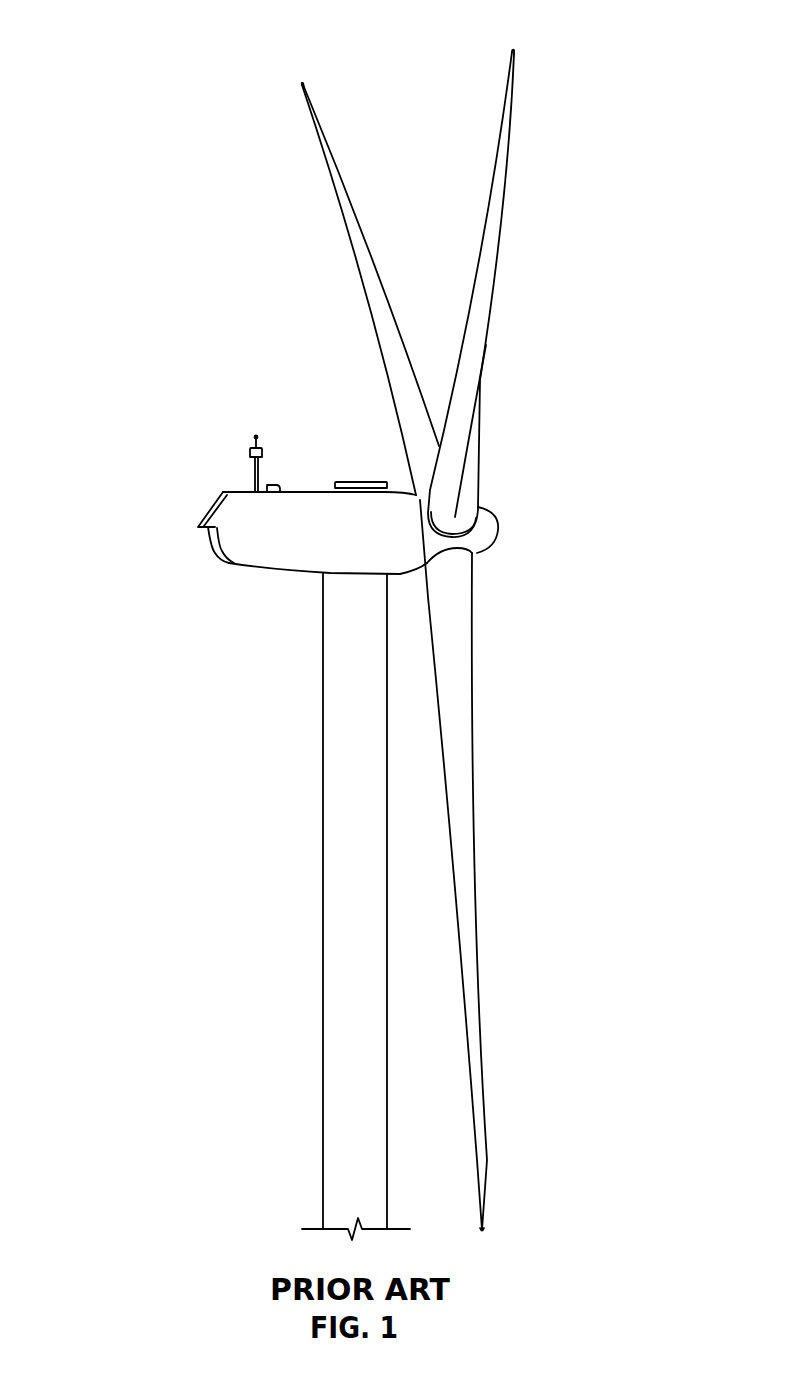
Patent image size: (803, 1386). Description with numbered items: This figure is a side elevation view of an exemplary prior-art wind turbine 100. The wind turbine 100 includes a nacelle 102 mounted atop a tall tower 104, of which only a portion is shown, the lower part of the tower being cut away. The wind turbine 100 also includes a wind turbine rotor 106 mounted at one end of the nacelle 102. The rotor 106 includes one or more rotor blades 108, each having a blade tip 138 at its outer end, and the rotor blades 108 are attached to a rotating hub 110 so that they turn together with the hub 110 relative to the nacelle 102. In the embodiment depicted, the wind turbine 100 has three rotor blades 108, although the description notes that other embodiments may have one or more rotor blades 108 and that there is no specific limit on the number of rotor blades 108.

The wind turbine 100 is at (153, 58).
The nacelle 102 is at (248, 570).
The tower 104 is at (323, 838).
The wind turbine rotor 106 is at (551, 327).
The rotor blade 108 is at (323, 123).
The rotating hub 110 is at (498, 530).
The blade tip 138 is at (302, 85).